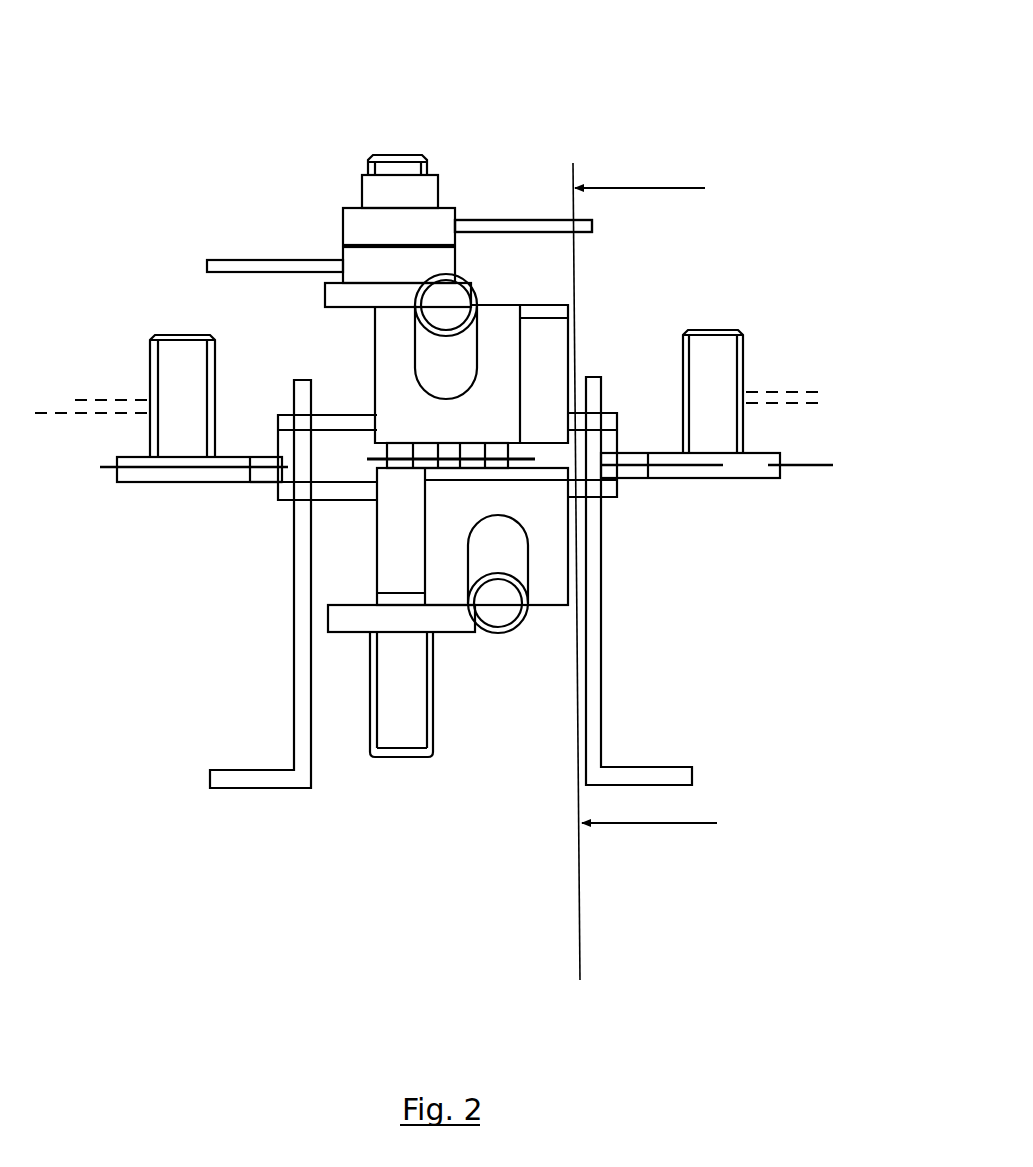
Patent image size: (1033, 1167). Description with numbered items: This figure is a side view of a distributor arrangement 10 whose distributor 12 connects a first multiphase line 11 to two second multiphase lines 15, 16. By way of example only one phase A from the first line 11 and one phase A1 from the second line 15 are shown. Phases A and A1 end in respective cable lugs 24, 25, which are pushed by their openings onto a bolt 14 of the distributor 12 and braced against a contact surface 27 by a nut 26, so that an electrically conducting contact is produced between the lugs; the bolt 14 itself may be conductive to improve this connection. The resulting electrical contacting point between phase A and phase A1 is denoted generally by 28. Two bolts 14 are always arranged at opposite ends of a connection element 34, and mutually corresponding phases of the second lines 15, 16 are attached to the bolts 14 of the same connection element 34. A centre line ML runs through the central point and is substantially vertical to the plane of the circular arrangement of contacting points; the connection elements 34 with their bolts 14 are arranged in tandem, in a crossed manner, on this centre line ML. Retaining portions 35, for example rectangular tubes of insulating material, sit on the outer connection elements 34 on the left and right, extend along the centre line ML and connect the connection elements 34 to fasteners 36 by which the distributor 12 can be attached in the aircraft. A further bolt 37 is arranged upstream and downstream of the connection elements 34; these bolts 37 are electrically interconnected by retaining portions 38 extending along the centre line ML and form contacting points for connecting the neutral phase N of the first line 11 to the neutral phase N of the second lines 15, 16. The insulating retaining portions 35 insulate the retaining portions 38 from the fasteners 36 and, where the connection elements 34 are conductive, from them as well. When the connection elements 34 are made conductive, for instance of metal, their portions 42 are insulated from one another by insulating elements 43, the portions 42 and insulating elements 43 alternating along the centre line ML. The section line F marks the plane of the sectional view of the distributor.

The distributor arrangement 10 is at (168, 91).
The first multiphase line 11 is at (255, 256).
The distributor 12 is at (260, 486).
The bolt 14 is at (382, 192).
The second multiphase line 15 is at (512, 210).
The second multiphase line 16 is at (523, 226).
The cable lug 24 is at (357, 218).
The cable lug 25 is at (455, 258).
The nut 26 is at (388, 157).
The contact surface 27 is at (342, 306).
The electrical contacting point 28 is at (421, 220).
The connection element 34 is at (388, 380).
The retaining portion 35 is at (337, 500).
The fastener 36 is at (303, 713).
The bolt 37 is at (170, 372).
The retaining portion 38 is at (137, 483).
The portion 42 is at (405, 453).
The insulating element 43 is at (423, 452).
The phase A is at (287, 258).
The phase A1 is at (487, 230).
The neutral phase N is at (62, 400).
The centre line ML is at (825, 460).
The section line F is at (648, 570).